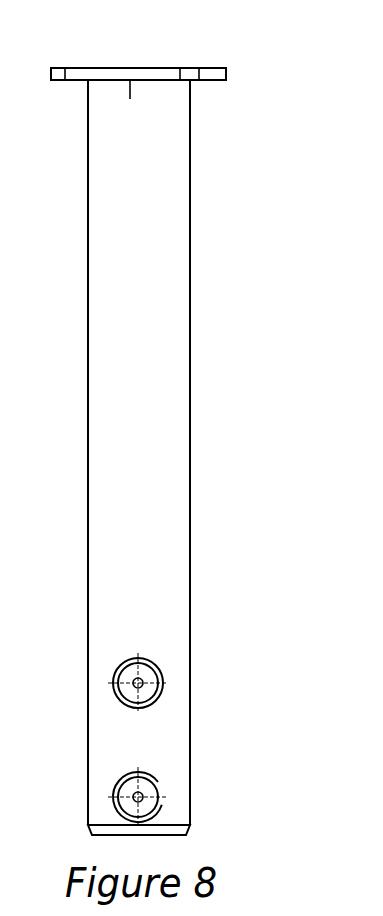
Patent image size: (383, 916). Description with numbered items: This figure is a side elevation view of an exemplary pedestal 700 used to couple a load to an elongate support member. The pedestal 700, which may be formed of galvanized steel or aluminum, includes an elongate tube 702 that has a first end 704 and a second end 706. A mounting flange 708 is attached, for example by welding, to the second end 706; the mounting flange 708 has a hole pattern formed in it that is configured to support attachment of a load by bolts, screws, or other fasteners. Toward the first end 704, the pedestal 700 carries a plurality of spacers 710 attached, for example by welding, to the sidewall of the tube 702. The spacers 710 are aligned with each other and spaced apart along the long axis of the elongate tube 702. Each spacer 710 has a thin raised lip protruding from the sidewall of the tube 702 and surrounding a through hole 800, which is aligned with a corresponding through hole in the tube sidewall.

The pedestal 700 is at (227, 359).
The elongate tube 702 is at (92, 415).
The first end 704 is at (205, 827).
The second end 706 is at (214, 103).
The mounting flange 708 is at (158, 67).
The spacer 710 is at (140, 658).
The through hole 800 is at (157, 789).